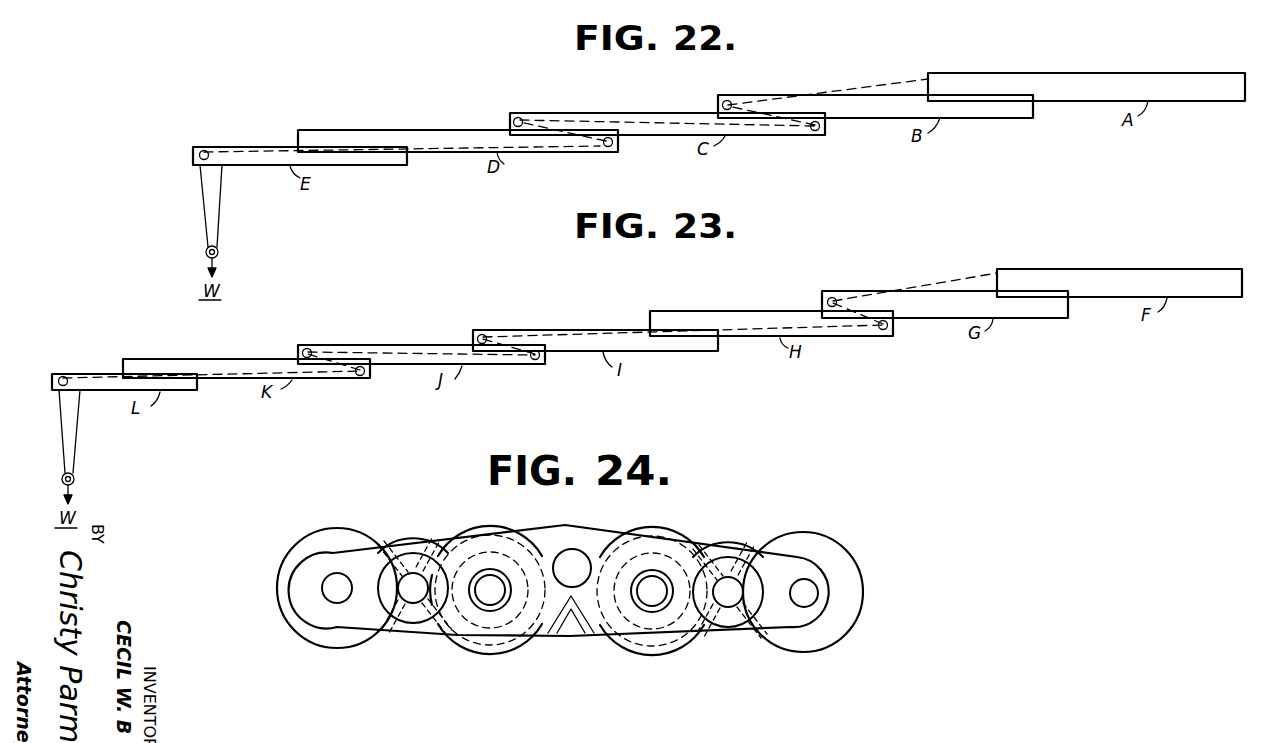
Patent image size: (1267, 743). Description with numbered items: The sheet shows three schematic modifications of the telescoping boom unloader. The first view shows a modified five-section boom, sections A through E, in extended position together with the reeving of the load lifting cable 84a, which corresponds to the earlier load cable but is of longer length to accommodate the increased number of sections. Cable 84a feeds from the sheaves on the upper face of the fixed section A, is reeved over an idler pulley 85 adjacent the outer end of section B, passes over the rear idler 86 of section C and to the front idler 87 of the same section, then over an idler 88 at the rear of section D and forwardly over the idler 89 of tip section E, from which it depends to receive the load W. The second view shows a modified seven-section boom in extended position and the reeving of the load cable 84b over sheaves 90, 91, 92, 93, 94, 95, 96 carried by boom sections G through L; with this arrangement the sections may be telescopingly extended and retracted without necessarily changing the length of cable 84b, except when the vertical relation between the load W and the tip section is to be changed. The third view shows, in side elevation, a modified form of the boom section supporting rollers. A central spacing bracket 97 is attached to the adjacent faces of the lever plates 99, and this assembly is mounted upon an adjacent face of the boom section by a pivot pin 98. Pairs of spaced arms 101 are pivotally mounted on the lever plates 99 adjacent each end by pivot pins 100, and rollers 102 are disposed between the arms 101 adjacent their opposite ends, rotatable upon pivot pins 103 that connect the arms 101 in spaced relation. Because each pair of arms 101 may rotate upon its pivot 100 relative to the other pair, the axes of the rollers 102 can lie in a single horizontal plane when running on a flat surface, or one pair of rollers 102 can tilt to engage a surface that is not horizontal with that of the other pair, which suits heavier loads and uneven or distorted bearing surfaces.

In FIG. 22, the load lifting cable 84a is at (877, 81).
In FIG. 23, the load cable 84b is at (509, 331).
In FIG. 22, the idler pulley 85 is at (722, 104).
In FIG. 22, the rear idler 86 is at (815, 131).
In FIG. 22, the front idler 87 is at (518, 117).
In FIG. 22, the idler 88 is at (608, 147).
In FIG. 22, the idler 89 is at (204, 150).
In FIG. 23, the sheave 90 is at (833, 297).
In FIG. 23, the sheave 91 is at (883, 330).
In FIG. 23, the sheave 92 is at (482, 334).
In FIG. 23, the sheave 93 is at (535, 360).
In FIG. 23, the sheave 94 is at (307, 348).
In FIG. 23, the sheave 95 is at (360, 376).
In FIG. 23, the sheave 96 is at (63, 376).
In FIG. 24, the central spacing bracket 97 is at (572, 640).
In FIG. 24, the pivot pin 98 is at (572, 549).
In FIG. 24, the lever plates 99 is at (538, 638).
In FIG. 24, the pivot pins 100 is at (413, 573).
In FIG. 24, the spaced arms 101 is at (352, 628).
In FIG. 24, the rollers 102 is at (278, 589).
In FIG. 24, the pivot pins 103 is at (337, 575).